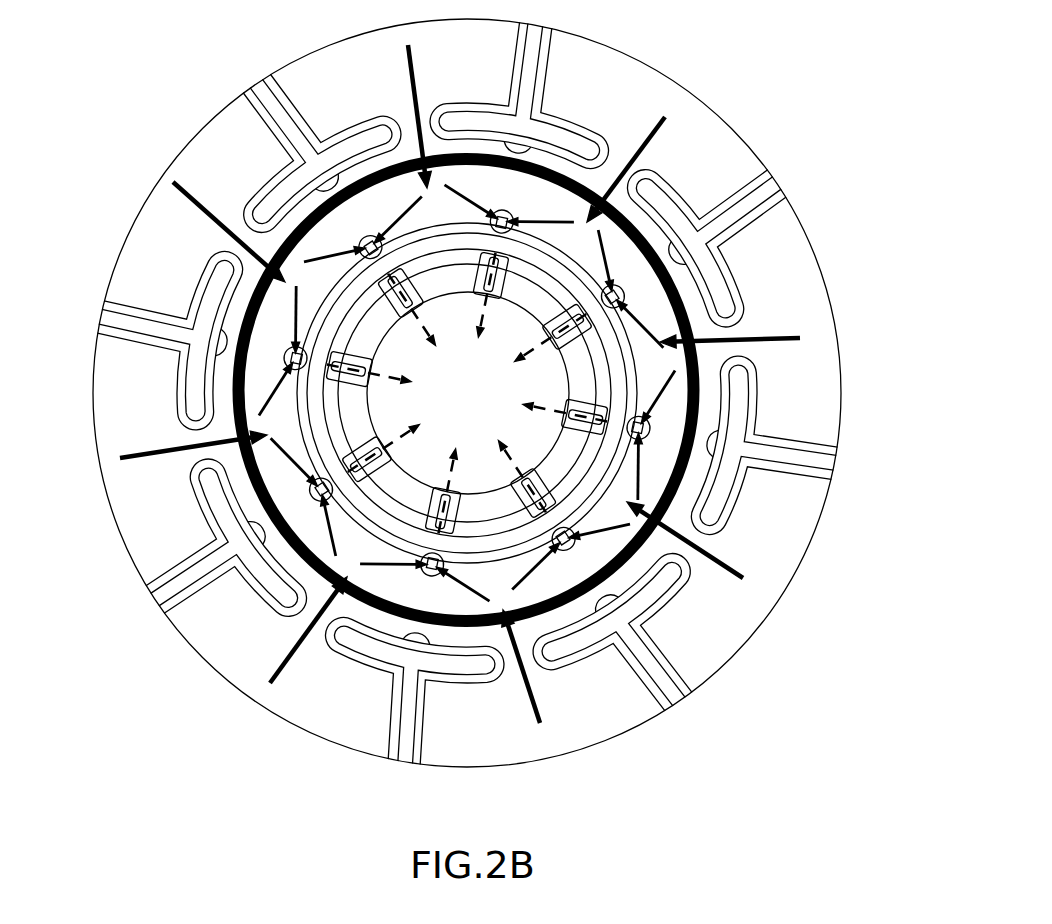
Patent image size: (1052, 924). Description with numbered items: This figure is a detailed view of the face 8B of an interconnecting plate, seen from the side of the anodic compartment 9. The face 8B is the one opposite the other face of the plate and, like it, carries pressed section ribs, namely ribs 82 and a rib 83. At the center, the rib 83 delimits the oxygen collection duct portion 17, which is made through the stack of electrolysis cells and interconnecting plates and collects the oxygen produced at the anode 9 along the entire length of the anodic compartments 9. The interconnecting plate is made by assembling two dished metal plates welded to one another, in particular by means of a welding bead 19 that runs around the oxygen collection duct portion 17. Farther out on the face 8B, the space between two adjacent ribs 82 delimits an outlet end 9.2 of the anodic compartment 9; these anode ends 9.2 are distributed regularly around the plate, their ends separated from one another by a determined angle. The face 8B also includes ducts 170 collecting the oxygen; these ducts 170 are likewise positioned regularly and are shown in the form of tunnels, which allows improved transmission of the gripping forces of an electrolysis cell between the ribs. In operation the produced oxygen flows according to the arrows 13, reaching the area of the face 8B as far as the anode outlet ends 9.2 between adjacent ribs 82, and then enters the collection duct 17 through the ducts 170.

The face of interconnecting plate 8B is at (220, 627).
The anodic compartment 9 is at (490, 737).
The outlet end of anodic compartment 9.2 is at (727, 352).
The arrows 13 is at (647, 131).
The oxygen collection duct portion 17 is at (486, 418).
The welding bead 19 is at (697, 390).
The ribs 82 is at (582, 642).
The rib 83 is at (605, 345).
The ducts collecting the oxygen 170 is at (443, 497).